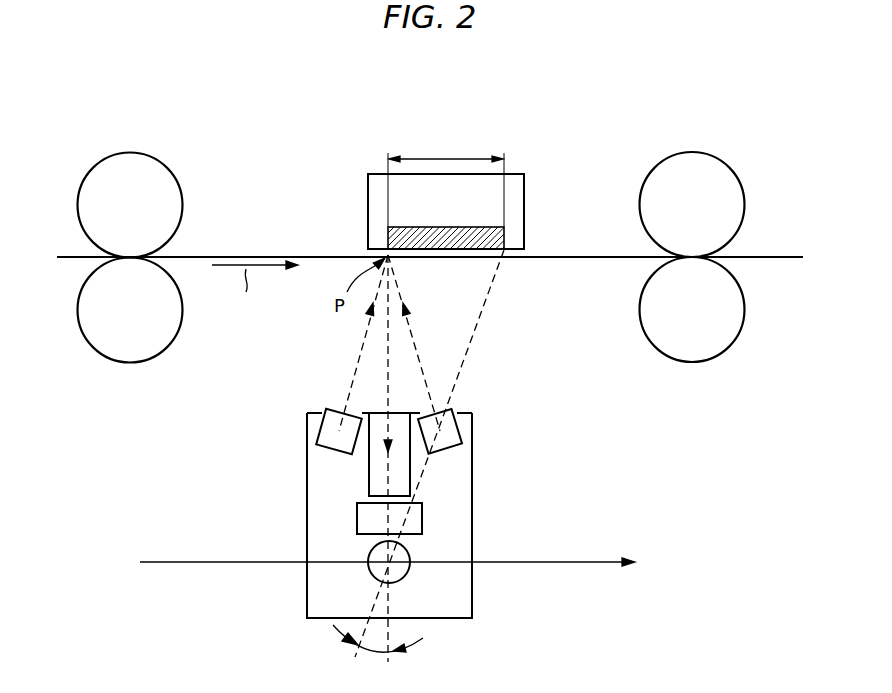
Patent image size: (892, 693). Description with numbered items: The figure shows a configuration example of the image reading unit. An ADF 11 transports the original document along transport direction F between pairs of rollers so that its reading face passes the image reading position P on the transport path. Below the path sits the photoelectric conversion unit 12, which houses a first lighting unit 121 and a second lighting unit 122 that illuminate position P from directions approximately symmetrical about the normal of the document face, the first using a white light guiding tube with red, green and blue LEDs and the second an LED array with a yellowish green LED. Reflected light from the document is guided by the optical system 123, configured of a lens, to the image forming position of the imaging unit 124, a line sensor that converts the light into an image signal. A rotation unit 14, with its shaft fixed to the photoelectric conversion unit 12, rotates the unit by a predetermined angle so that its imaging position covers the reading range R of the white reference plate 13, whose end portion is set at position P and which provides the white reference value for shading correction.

The ADF 11 is at (286, 126).
The photoelectric conversion unit 12 is at (472, 473).
The white reference plate 13 is at (513, 180).
The rotation unit 14 is at (410, 555).
The first lighting unit 121 is at (328, 424).
The second lighting unit 122 is at (449, 426).
The optical system 123 is at (369, 478).
The imaging unit 124 is at (357, 520).